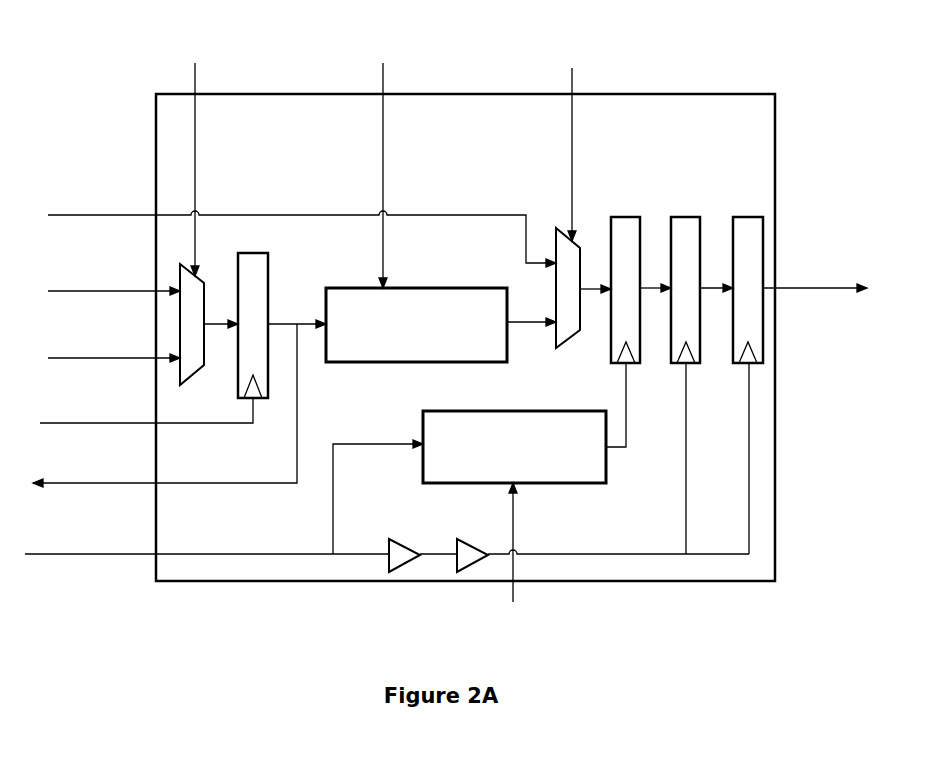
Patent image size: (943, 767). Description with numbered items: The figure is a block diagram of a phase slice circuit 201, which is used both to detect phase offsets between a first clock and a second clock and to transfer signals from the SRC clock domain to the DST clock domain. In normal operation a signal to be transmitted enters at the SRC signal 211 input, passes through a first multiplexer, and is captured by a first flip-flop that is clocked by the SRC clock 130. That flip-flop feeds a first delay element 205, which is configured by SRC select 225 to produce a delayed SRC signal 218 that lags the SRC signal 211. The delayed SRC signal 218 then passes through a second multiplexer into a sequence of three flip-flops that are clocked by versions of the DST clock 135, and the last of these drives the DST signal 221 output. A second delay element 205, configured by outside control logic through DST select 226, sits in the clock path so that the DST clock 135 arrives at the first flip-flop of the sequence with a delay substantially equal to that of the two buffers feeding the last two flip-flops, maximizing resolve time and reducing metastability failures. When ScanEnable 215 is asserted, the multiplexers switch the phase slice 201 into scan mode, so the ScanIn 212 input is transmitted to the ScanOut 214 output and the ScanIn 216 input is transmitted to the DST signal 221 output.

The phase slice circuit 201 is at (286, 161).
The delay element 205 is at (532, 470).
The SRC signal 211 is at (102, 359).
The ScanIn 212 is at (113, 291).
The ScanOut 214 is at (165, 416).
The ScanEnable 215 is at (389, 142).
The ScanIn 216 is at (302, 228).
The delayed SRC signal 218 is at (528, 322).
The DST signal 221 is at (815, 305).
The SRC select 225 is at (382, 148).
The DST select 226 is at (513, 570).
The SRC clock 130 is at (141, 424).
The DST clock 135 is at (386, 555).